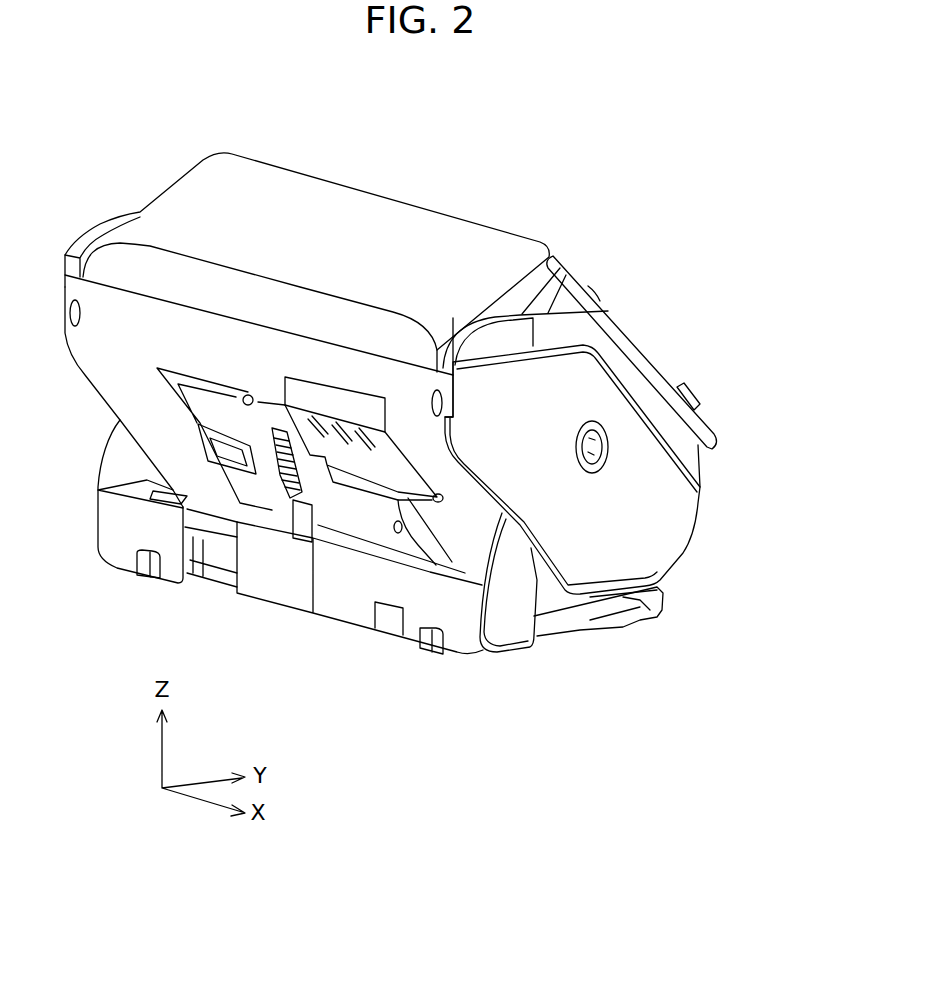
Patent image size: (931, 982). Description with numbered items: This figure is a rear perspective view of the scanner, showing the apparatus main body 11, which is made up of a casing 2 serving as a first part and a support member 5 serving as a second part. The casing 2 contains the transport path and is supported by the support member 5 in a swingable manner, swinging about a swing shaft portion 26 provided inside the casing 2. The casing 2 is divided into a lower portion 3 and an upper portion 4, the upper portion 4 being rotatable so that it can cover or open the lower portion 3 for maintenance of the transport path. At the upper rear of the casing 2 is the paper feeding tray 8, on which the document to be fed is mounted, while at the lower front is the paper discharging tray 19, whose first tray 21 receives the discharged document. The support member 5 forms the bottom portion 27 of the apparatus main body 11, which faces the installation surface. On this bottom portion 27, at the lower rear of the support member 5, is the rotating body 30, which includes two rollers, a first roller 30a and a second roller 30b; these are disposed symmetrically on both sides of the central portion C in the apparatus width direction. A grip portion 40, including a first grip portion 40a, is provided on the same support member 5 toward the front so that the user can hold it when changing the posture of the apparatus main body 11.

The paper feeding tray 8 is at (292, 192).
The first tray 21 is at (632, 322).
The paper discharging tray 19 is at (670, 300).
The swing shaft portion 26 is at (603, 420).
The lower portion 3 is at (572, 530).
The upper portion 4 is at (577, 527).
The casing 2 is at (648, 735).
The support member 5 is at (503, 620).
The apparatus main body 11 is at (608, 779).
The bottom portion 27 is at (353, 627).
The central portion C is at (260, 614).
The rotating body 30 is at (261, 649).
The first roller 30a is at (399, 688).
The second roller 30b is at (137, 563).
The grip portion 40 is at (670, 611).
The first grip portion 40a is at (663, 602).